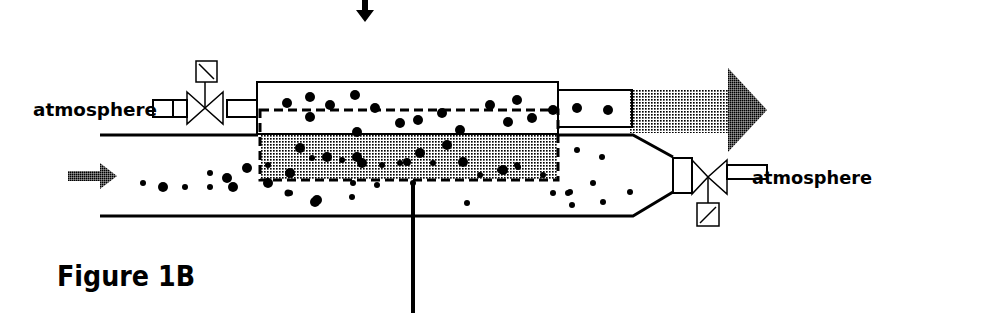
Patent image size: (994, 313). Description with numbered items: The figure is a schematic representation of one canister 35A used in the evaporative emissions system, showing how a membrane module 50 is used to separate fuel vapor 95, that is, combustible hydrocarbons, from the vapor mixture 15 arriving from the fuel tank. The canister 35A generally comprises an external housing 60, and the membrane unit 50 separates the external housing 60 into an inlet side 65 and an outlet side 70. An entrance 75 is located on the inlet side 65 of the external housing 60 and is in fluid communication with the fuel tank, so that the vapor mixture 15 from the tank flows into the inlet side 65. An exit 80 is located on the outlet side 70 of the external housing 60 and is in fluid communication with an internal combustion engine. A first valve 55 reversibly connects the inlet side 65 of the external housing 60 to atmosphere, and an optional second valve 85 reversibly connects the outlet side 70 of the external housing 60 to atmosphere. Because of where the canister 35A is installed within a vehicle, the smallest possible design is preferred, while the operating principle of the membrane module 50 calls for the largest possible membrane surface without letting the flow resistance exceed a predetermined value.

The vapor mixture 15 is at (265, 182).
The canister 35A is at (478, 72).
The membrane module 50 is at (505, 180).
The first valve 55 is at (200, 108).
The external housing 60 is at (283, 82).
The inlet side 65 is at (378, 202).
The outlet side 70 is at (432, 95).
The entrance 75 is at (74, 177).
The exit 80 is at (717, 110).
The second valve 85 is at (732, 183).
The fuel vapor 95 is at (507, 98).